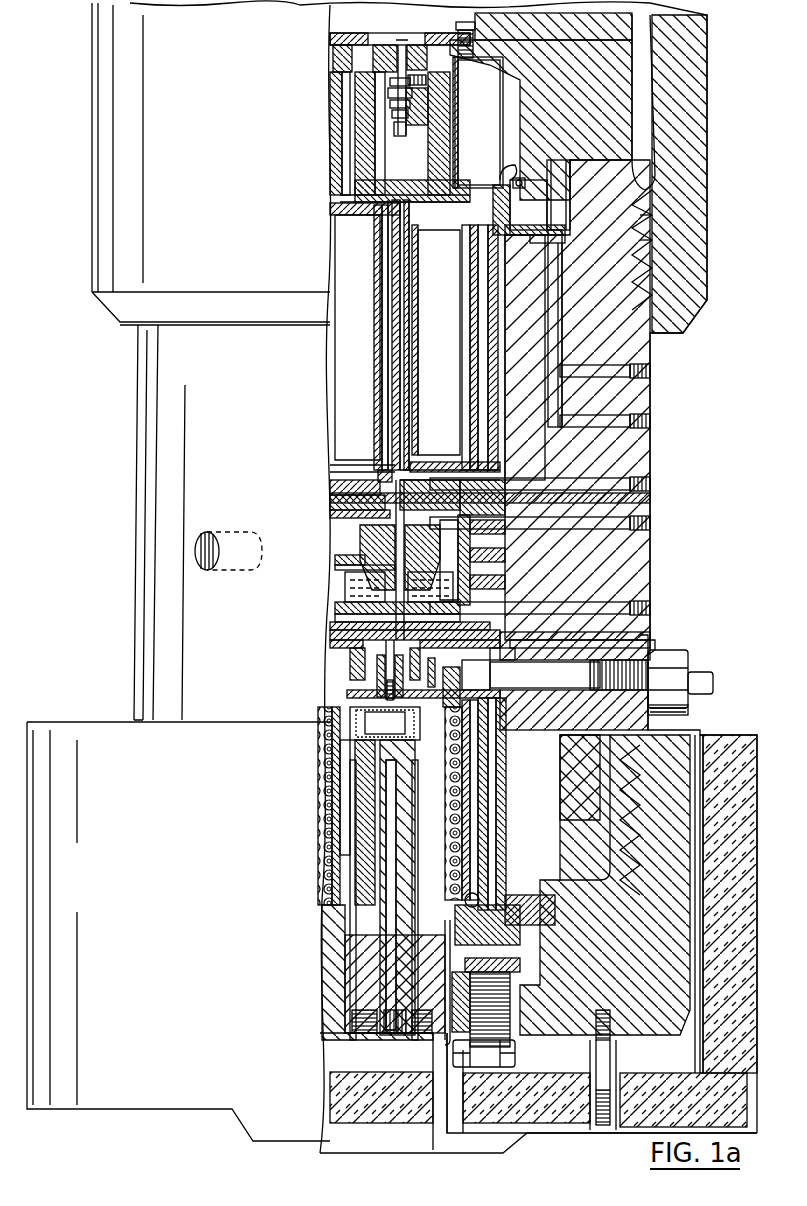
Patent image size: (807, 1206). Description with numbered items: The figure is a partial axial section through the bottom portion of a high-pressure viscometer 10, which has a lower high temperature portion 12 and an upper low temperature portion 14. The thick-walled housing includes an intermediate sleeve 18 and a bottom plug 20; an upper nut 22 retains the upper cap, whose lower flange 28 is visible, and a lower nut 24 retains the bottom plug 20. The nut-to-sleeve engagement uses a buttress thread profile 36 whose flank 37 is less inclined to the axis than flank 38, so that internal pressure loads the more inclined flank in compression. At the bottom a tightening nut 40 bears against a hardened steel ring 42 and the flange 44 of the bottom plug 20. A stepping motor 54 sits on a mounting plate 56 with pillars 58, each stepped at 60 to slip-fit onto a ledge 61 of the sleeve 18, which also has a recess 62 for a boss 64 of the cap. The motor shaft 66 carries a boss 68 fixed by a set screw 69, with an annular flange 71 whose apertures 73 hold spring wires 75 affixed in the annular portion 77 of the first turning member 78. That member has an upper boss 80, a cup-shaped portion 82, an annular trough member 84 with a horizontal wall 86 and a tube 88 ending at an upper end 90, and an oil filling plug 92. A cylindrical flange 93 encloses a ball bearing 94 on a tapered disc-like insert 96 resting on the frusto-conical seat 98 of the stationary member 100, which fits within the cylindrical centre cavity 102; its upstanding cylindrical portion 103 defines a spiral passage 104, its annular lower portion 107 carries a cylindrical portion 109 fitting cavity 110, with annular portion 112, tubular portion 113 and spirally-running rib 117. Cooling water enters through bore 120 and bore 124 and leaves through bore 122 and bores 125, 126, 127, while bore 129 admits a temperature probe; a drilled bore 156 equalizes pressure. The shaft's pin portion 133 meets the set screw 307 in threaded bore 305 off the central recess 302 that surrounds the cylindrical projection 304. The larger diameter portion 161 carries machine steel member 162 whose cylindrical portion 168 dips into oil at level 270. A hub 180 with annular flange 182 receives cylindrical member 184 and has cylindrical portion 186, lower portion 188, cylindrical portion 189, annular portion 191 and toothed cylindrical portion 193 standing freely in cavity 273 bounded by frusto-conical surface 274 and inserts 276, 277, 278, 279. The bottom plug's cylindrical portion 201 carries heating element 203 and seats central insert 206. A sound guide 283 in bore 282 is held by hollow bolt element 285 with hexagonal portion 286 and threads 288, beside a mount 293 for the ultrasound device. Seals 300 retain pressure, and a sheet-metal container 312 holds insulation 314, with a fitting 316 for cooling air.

The viscometer 10 is at (108, 628).
The lower high temperature portion 12 is at (108, 637).
The upper low temperature portion 14 is at (80, 5).
The intermediate sleeve 18 is at (636, 445).
The bottom plug 20 is at (325, 968).
The upper nut 22 is at (700, 105).
The lower nut 24 is at (646, 946).
The lower flange 28 is at (634, 80).
The thread profile 36 is at (655, 228).
The flank 37 is at (652, 255).
The flank 38 is at (653, 205).
The tightening nut 40 is at (517, 1054).
The hardened steel ring 42 is at (515, 965).
The flange 44 is at (520, 935).
The stepping motor 54 is at (480, 30).
The mounting plate 56 is at (520, 40).
The pillars 58 is at (490, 123).
The stepped bottom portion 60 is at (548, 160).
The ledge 61 is at (525, 178).
The recess 62 is at (565, 163).
The boss 64 is at (566, 190).
The shaft 66 is at (392, 42).
The boss 68 is at (385, 45).
The set screw 69 is at (418, 85).
The annular flange 71 is at (343, 45).
The antipodal apertures 73 is at (350, 48).
The spring wires 75 is at (459, 95).
The annular portion 77 is at (460, 240).
The first turning member 78 is at (352, 233).
The upper boss 80 is at (427, 87).
The cup-shaped portion 82 is at (335, 160).
The annular trough member 84 is at (490, 308).
The horizontal wall 86 is at (462, 475).
The tube 88 is at (375, 325).
The upper end 90 is at (430, 192).
The oil filling plug 92 is at (508, 275).
The cylindrical flange 93 is at (332, 487).
The ball bearing 94 is at (368, 475).
The tapered disc-like insert 96 is at (332, 514).
The frusto-conical seat 98 is at (443, 559).
The stationary member 100 is at (508, 500).
The cylindrical centre cavity 102 is at (495, 327).
The upstanding cylindrical portion 103 is at (495, 282).
The spiral passage 104 is at (498, 385).
The annular lower portion 107 is at (462, 540).
The cylindrical portion 109 is at (490, 555).
The smaller-diameter cylindrical cavity 110 is at (490, 582).
The annular portion 112 is at (336, 615).
The tubular portion 113 is at (410, 595).
The spirally-running rib 117 is at (490, 530).
The bore 120 is at (632, 600).
The bore 122 is at (632, 515).
The bore 124 is at (632, 476).
The bore 125 is at (560, 245).
The bore 126 is at (564, 278).
The bore 127 is at (632, 412).
The bore 129 is at (632, 360).
The pin portion 133 is at (394, 130).
The drilled bore 156 is at (410, 238).
The larger diameter portion 161 is at (368, 528).
The machine steel member 162 is at (336, 560).
The cylindrical portion 168 is at (346, 580).
The hub 180 is at (332, 652).
The annular flange 182 is at (350, 718).
The cylindrical member 184 is at (472, 734).
The cylindrical portion 186 is at (342, 790).
The lower portion 188 is at (330, 855).
The cylindrical portion 189 is at (350, 676).
The annular portion 191 is at (520, 632).
The cylindrical portion 193 is at (332, 628).
The cylindrical portion 201 is at (320, 745).
The heating element 203 is at (334, 765).
The central insert 206 is at (382, 905).
The liquid level 270 is at (457, 659).
The cavity 273 is at (470, 705).
The frusto-conical surface 274 is at (347, 694).
The insert 276 is at (480, 752).
The insert 277 is at (490, 790).
The insert 278 is at (492, 806).
The insert 279 is at (500, 822).
The bore 282 is at (570, 655).
The sound guide 283 is at (555, 642).
The hollow bolt element 285 is at (680, 714).
The hexagonal portion 286 is at (670, 672).
The threads 288 is at (648, 645).
The mount 293 is at (700, 686).
The seals 300 is at (535, 216).
The central recess 302 is at (390, 82).
The cylindrical projection 304 is at (390, 93).
The threaded bore 305 is at (392, 105).
The set screw 307 is at (394, 114).
The sheet-metal container 312 is at (757, 808).
The insulation 314 is at (742, 870).
The fitting 316 is at (460, 1125).